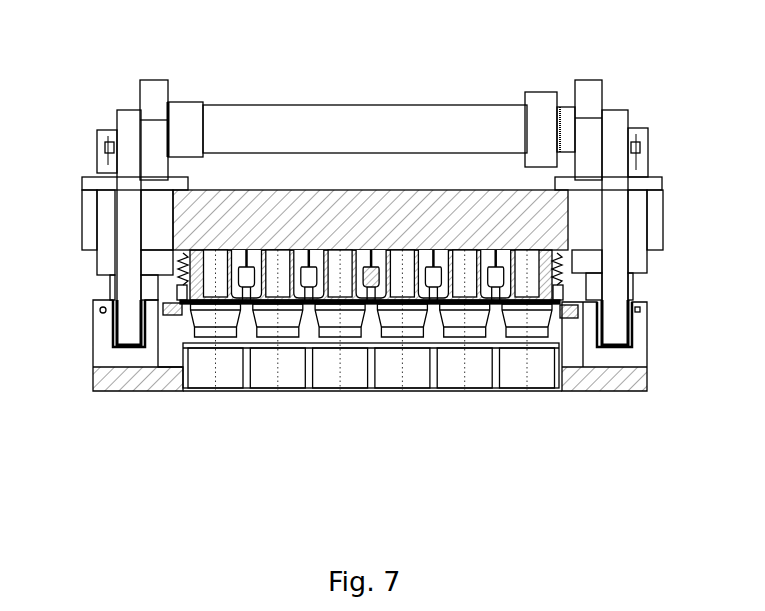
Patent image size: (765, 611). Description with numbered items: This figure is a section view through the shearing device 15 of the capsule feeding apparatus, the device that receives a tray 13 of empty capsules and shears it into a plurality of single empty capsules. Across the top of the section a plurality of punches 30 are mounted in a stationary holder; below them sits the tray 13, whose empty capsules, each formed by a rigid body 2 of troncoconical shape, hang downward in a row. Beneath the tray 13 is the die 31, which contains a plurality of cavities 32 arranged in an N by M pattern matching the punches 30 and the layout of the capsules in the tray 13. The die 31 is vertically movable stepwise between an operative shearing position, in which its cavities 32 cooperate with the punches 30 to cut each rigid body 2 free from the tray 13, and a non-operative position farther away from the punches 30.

The shearing device 15 is at (230, 83).
The punch 30 is at (364, 267).
The tray 13 is at (184, 318).
The rigid body 2 is at (349, 318).
The cavity 32 is at (528, 372).
The die 31 is at (613, 388).